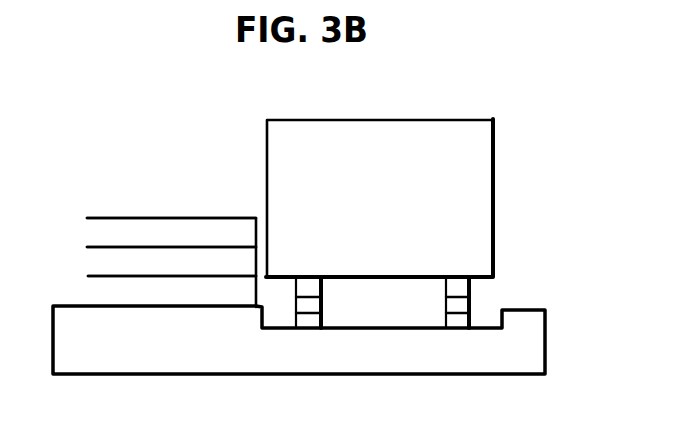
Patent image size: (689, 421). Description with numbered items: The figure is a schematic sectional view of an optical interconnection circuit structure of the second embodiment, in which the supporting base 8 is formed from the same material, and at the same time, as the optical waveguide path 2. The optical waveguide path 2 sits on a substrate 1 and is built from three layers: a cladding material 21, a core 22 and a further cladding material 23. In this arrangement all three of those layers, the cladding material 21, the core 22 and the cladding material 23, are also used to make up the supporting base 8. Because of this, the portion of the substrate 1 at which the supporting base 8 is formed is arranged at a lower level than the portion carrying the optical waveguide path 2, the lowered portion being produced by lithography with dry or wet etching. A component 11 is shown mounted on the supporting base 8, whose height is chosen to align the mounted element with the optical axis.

The substrate 1 is at (533, 352).
The optical waveguide path 2 is at (137, 267).
The supporting base 8 is at (620, 197).
The chip element 11 is at (393, 120).
The cladding material 21 is at (107, 292).
The core 22 is at (105, 262).
The cladding material 23 is at (107, 230).